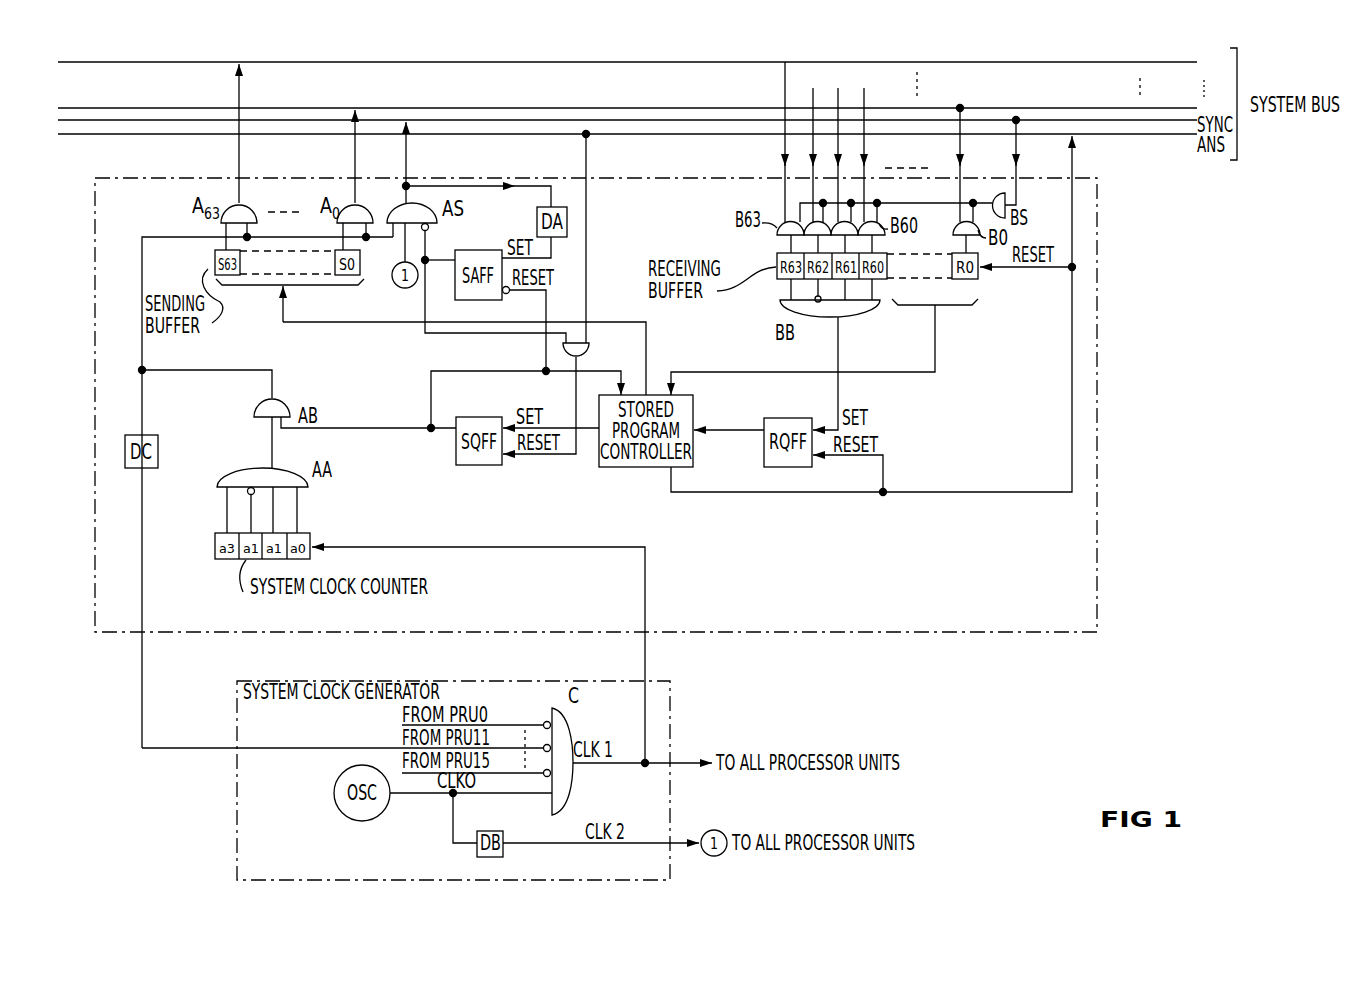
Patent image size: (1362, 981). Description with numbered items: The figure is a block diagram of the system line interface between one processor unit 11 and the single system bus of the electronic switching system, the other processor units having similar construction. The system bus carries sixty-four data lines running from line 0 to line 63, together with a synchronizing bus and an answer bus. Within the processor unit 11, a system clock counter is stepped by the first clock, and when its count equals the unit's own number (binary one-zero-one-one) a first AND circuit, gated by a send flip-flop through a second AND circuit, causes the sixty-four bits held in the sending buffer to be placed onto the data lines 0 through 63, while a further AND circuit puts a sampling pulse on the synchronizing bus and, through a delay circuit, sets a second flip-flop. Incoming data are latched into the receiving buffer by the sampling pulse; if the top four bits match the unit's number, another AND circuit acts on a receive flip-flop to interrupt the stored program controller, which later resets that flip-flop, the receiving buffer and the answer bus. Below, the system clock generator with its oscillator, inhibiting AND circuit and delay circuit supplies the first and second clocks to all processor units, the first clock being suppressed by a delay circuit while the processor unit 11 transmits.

The processor unit 11 is at (596, 405).
The system bus data line 63 is at (636, 65).
The system bus data line 0 is at (633, 104).